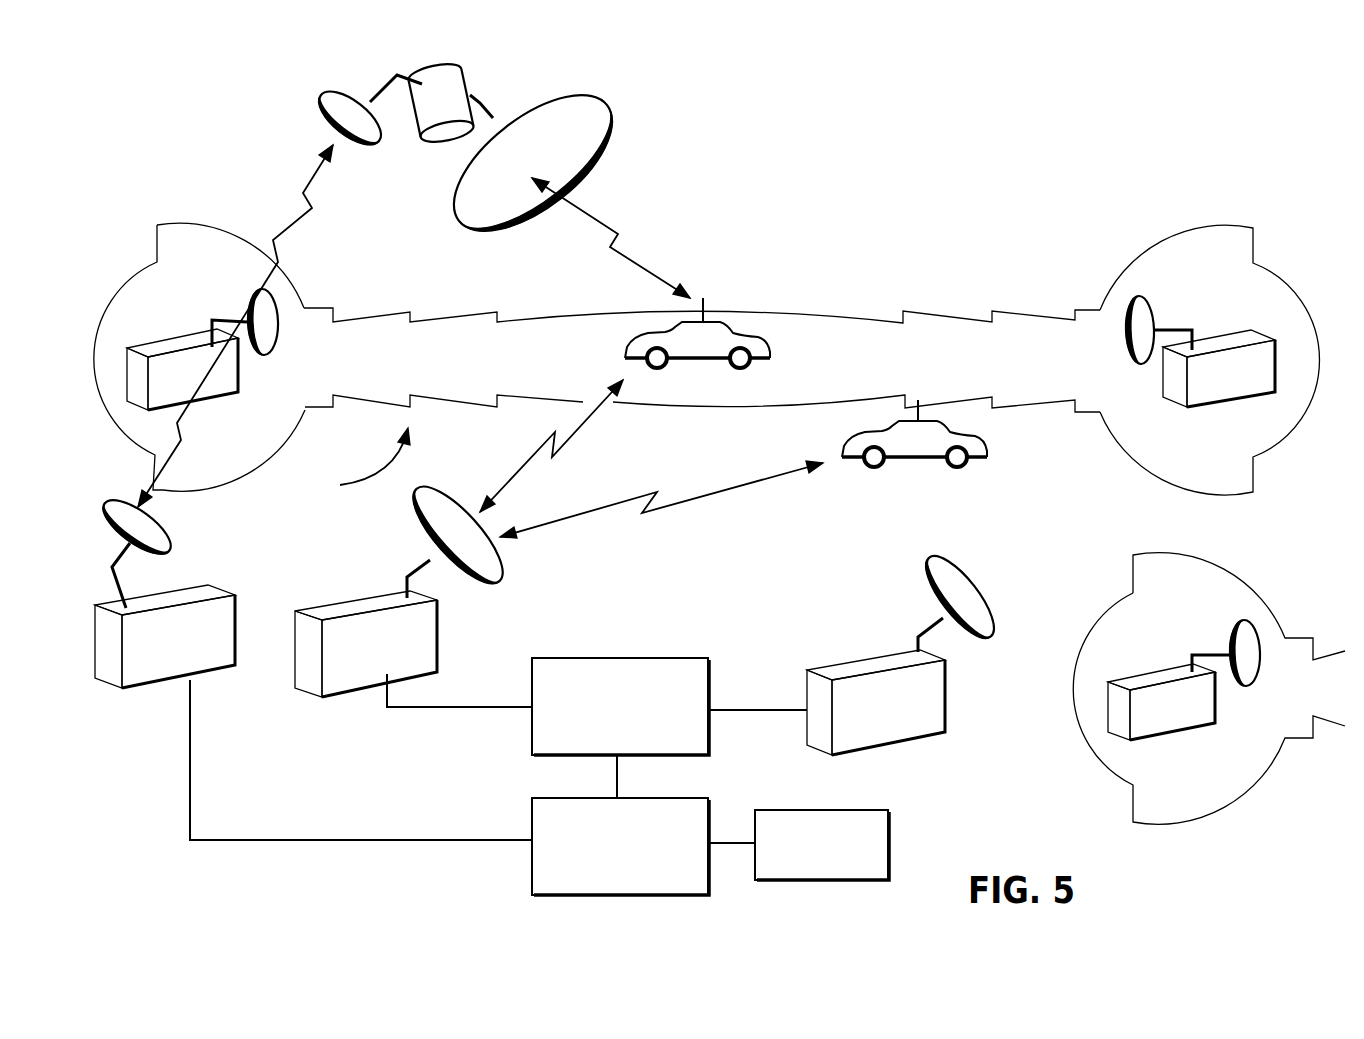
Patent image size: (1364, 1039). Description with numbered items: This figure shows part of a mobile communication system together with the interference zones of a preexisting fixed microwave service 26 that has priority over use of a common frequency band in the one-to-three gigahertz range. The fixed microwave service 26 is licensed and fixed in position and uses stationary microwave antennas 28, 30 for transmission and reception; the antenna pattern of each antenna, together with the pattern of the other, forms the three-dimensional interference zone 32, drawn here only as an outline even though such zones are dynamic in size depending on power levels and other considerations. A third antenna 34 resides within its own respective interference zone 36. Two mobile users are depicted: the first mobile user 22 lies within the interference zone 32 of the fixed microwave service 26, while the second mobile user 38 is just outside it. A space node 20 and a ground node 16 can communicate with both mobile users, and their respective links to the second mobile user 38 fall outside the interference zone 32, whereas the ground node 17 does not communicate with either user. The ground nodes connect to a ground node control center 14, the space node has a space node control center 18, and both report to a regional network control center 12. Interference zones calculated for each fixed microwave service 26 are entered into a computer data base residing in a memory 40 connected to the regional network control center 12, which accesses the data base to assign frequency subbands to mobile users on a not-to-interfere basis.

The regional network control center 12 is at (532, 818).
The ground node control center 14 is at (628, 658).
The ground node 16 is at (368, 598).
The ground node 17 is at (870, 656).
The space node control center 18 is at (223, 587).
The space node 20 is at (452, 66).
The first mobile user 22 is at (687, 359).
The fixed microwave service 26 is at (359, 463).
The stationary microwave antenna 28 is at (158, 340).
The stationary microwave antenna 30 is at (1212, 338).
The interference zone 32 is at (497, 311).
The third antenna 34 is at (1158, 675).
The interference zone 36 is at (1240, 586).
The second mobile user 38 is at (912, 458).
The memory 40 is at (890, 834).